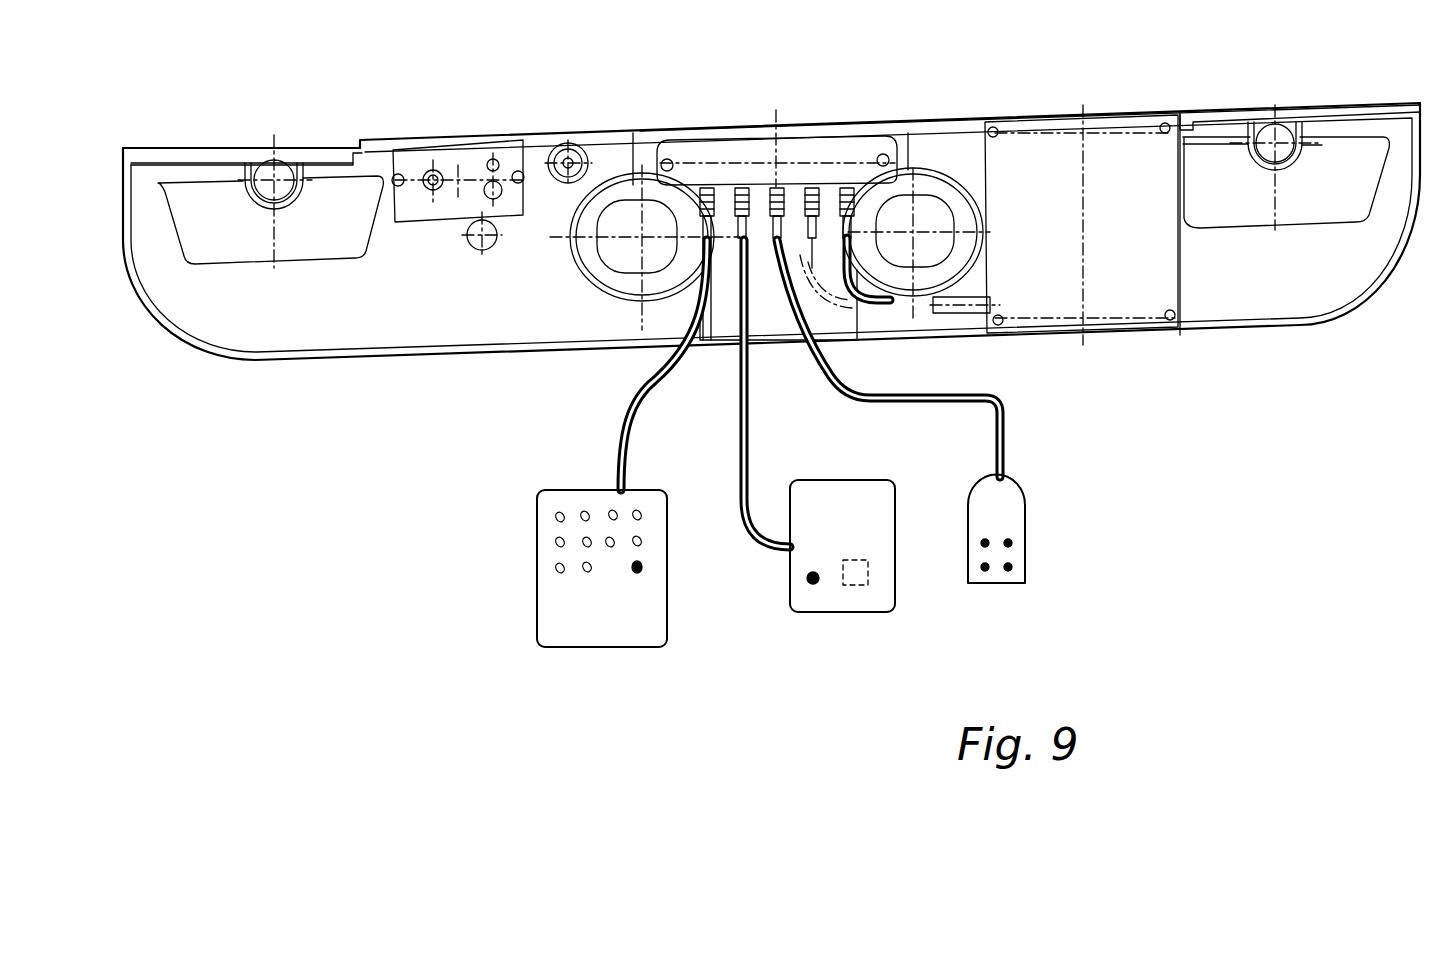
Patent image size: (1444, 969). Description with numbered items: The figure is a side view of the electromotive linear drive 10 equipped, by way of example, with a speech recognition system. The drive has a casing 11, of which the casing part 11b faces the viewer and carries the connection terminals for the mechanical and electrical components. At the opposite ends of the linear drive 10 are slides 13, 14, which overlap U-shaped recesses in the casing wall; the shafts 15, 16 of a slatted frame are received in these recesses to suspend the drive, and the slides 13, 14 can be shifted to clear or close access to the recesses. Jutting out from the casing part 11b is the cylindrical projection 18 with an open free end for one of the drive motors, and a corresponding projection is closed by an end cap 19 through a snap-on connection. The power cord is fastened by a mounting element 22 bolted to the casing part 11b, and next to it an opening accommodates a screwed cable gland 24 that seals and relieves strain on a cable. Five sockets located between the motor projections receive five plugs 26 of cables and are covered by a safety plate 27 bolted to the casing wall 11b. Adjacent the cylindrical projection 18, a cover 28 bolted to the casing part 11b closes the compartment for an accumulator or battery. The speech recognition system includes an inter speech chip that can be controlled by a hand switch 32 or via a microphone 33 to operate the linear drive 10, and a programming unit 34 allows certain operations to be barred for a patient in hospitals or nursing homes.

The linear drive 10 is at (1384, 290).
The casing 11 is at (1238, 267).
The casing part 11b is at (395, 318).
The slide 13 is at (1345, 110).
The slide 14 is at (223, 152).
The shaft 15 is at (1263, 140).
The shaft 16 is at (283, 173).
The cylindrical projection 18 is at (938, 270).
The end cap 19 is at (597, 277).
The mounting element 22 is at (412, 160).
The cable gland 24 is at (577, 148).
The plugs 26 is at (845, 218).
The safety plate 27 is at (740, 148).
The cover 28 is at (1052, 230).
The hand switch 32 is at (1017, 527).
The microphone 33 is at (870, 600).
The programming unit 34 is at (647, 627).